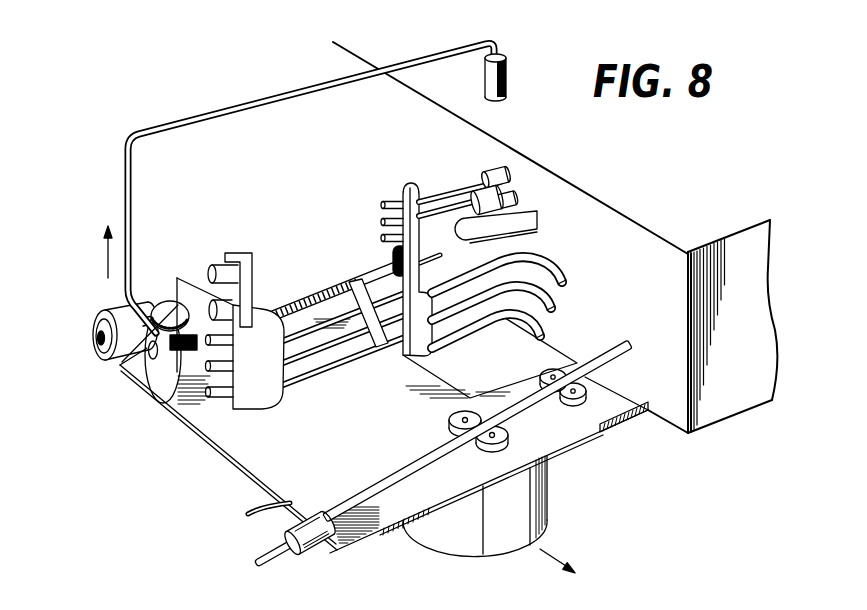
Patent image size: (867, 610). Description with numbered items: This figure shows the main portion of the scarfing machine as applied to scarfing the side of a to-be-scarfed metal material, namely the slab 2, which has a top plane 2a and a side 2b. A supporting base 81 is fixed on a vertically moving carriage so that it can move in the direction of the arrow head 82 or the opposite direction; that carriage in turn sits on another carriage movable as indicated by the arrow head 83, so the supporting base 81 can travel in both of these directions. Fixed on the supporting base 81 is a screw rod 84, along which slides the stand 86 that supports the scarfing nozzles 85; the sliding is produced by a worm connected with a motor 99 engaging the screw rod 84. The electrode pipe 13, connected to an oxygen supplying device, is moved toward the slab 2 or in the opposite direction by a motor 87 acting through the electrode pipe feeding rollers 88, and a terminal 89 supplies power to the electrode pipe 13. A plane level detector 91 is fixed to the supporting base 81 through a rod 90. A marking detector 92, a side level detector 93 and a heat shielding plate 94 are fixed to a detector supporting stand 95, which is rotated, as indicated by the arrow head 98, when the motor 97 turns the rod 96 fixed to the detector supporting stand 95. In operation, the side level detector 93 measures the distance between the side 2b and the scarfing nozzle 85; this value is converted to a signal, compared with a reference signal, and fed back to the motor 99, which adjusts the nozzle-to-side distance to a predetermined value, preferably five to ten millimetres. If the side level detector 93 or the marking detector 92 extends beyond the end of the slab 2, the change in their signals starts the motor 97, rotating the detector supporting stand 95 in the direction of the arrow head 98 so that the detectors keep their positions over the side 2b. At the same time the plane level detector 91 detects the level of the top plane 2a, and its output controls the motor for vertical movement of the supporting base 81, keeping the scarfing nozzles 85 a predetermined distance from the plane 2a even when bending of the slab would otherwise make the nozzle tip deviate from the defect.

The to-be-scarfed metal material 2 is at (771, 277).
The top plane 2a is at (710, 188).
The side 2b is at (693, 420).
The electrode pipe 13 is at (617, 352).
The supporting base 81 is at (222, 437).
The arrow head 82 is at (105, 243).
The arrow head 83 is at (580, 560).
The screw rod 84 is at (167, 377).
The scarfing nozzles 85 is at (478, 322).
The stand 86 is at (257, 400).
The motor 87 is at (548, 498).
The electrode pipe feeding rollers 88 is at (509, 432).
The terminal 89 is at (303, 552).
The rod 90 is at (262, 100).
The plane level detector 91 is at (506, 82).
The marking detector 92 is at (497, 167).
The side level detector 93 is at (511, 200).
The heat shielding plate 94 is at (523, 225).
The detector supporting stand 95 is at (403, 198).
The lead screw 96 is at (310, 295).
The motor 97 is at (228, 262).
The arrow head 98 is at (369, 265).
The motor 99 is at (110, 315).